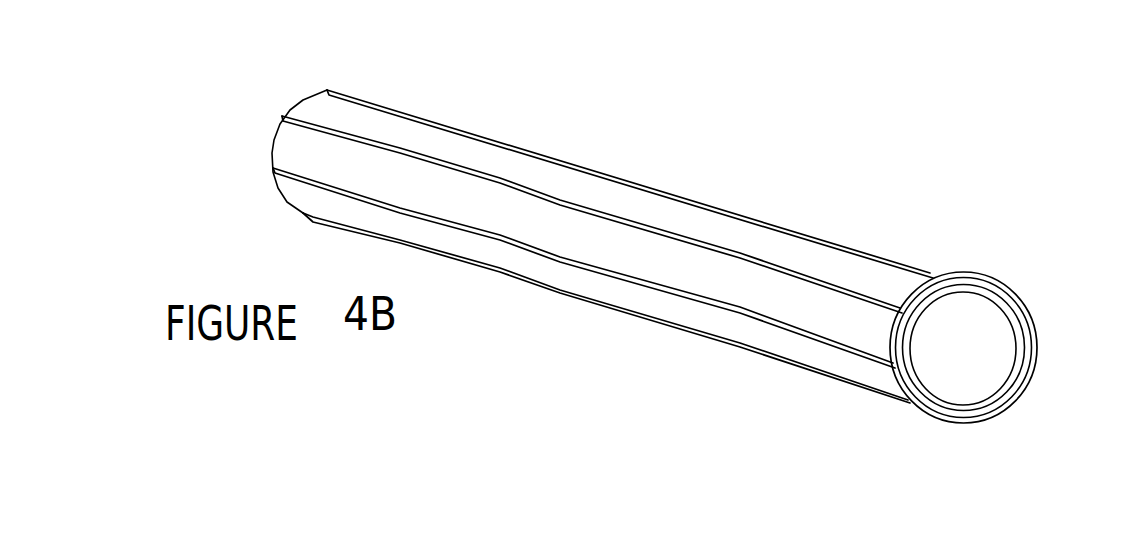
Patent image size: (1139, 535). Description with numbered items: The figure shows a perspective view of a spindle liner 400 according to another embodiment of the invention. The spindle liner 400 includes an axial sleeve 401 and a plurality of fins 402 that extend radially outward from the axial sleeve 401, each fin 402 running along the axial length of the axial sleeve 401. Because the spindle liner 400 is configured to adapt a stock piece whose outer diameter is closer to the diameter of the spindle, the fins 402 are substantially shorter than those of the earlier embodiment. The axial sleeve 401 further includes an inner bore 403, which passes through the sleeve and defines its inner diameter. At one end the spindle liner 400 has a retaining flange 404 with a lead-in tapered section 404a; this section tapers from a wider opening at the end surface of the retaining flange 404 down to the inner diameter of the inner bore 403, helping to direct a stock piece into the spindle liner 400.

The spindle liner 400 is at (146, 208).
The axial sleeve 401 is at (318, 107).
The fins 402 is at (572, 159).
The inner bore 403 is at (963, 350).
The retaining flange 404 is at (1015, 290).
The lead-in tapered section 404a is at (1019, 364).